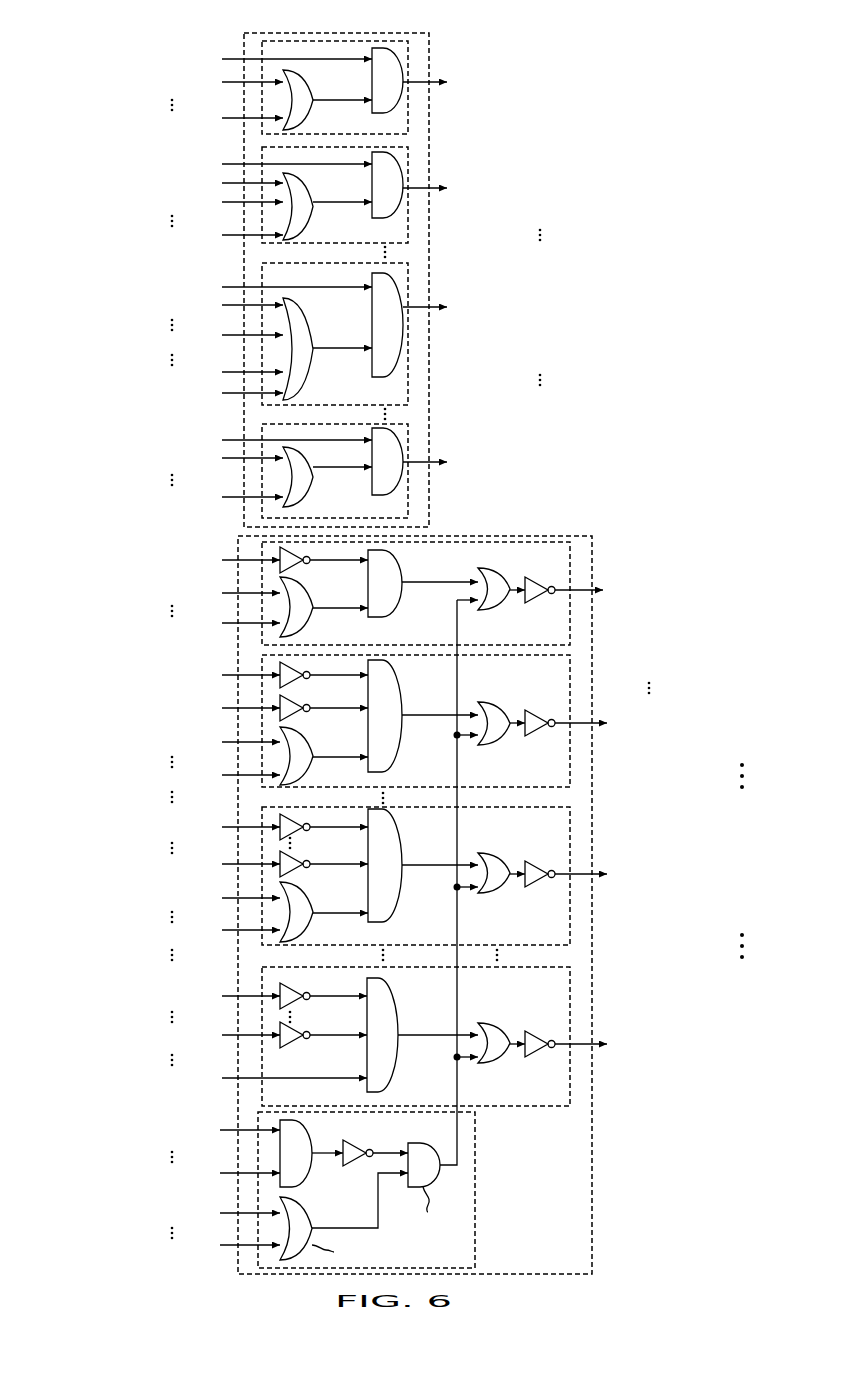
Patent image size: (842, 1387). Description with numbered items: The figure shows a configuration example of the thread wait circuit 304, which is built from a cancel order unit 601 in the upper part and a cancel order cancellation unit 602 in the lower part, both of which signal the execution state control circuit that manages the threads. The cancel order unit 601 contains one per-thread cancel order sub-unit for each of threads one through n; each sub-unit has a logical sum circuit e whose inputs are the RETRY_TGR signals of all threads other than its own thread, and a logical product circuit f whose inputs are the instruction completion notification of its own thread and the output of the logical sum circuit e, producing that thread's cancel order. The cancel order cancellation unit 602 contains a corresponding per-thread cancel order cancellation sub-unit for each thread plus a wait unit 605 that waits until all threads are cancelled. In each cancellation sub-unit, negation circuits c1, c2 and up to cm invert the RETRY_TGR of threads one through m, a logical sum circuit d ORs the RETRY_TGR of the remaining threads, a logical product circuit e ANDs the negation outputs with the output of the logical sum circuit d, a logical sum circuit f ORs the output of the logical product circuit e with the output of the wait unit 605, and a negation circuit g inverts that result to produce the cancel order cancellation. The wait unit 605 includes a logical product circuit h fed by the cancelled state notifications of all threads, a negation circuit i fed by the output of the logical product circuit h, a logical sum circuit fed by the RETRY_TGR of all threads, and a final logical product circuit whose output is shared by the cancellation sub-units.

The thread wait circuit 304 is at (722, 102).
The cancel order unit 601 is at (405, 33).
The cancel order cancellation unit 602 is at (572, 533).
The wait unit 605 is at (475, 1190).
The logical sum circuit / logical product circuit e is at (313, 88).
The logical product circuit / logical sum circuit f is at (400, 103).
The negation circuit g is at (535, 574).
The negation circuit c1 is at (295, 570).
The negation circuit c2 is at (295, 718).
The negation circuit cm is at (295, 873).
The logical sum circuit d is at (313, 603).
The logical product circuit h is at (312, 1172).
The negation circuit i is at (353, 1145).